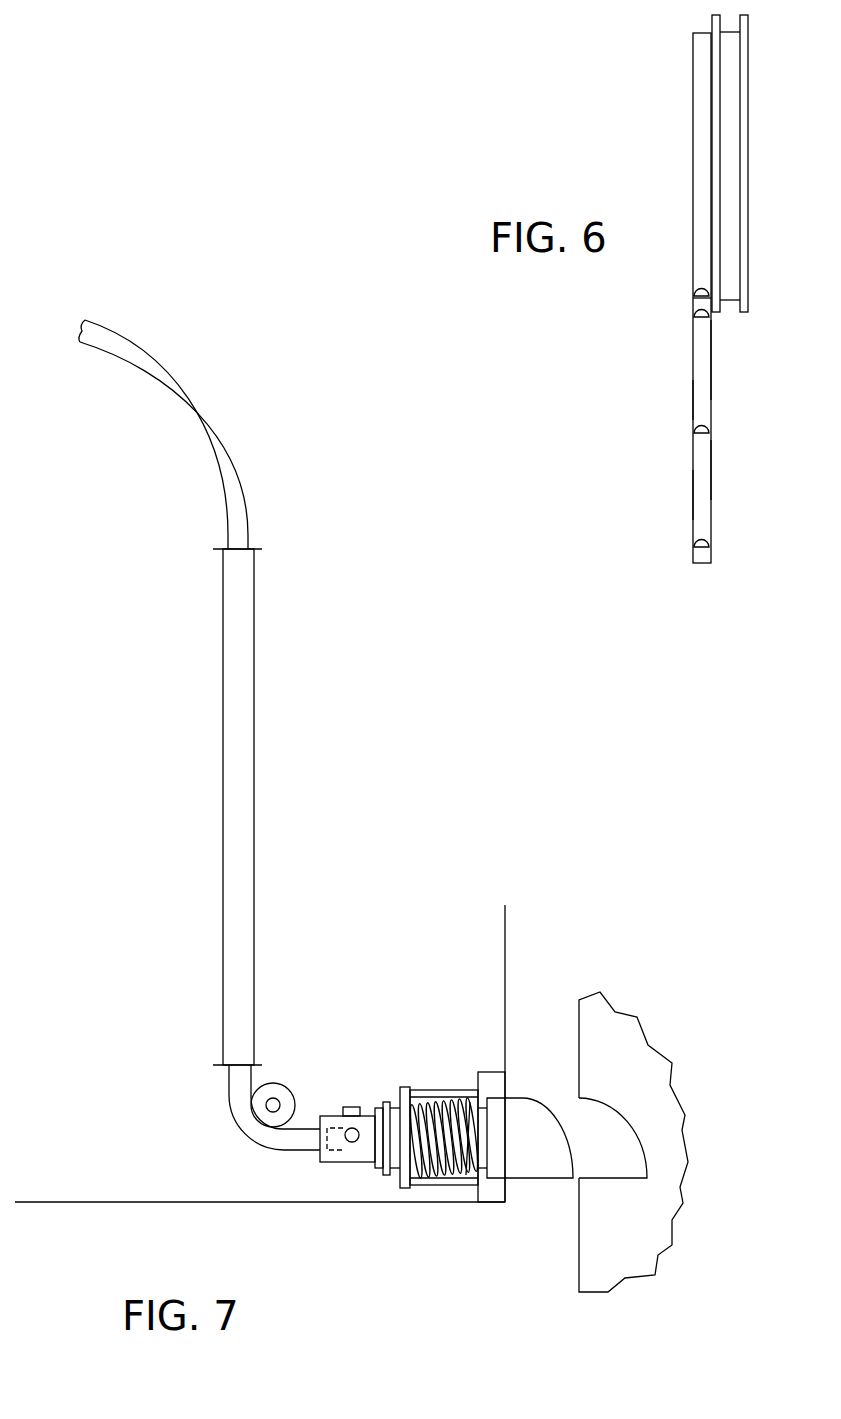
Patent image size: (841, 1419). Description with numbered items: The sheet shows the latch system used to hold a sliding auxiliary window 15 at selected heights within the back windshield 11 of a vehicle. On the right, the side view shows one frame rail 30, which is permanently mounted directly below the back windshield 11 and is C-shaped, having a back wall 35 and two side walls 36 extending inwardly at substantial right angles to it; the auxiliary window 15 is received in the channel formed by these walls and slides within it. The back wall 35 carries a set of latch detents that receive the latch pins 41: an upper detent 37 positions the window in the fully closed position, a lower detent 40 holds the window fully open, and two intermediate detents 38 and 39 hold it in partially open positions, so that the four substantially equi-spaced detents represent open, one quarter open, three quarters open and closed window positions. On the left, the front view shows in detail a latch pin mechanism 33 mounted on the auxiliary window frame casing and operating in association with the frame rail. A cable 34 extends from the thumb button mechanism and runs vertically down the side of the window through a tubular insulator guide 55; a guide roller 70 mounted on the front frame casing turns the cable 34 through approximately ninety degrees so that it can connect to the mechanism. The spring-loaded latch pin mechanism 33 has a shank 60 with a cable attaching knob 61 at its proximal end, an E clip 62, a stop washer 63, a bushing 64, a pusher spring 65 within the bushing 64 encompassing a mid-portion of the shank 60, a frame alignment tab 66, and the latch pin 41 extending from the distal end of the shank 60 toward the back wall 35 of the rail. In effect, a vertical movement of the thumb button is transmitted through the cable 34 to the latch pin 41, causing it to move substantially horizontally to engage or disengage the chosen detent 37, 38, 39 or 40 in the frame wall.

In FIG. 6, the back windshield 11 is at (735, 93).
In FIG. 6, the auxiliary window 15 is at (693, 80).
In FIG. 6, the frame rail 30 is at (705, 398).
In FIG. 7, the latch pin mechanism 33 is at (322, 993).
In FIG. 7, the cable 34 is at (164, 392).
In FIG. 6, the back wall 35 is at (712, 360).
In FIG. 7, the back wall 35 is at (590, 1030).
In FIG. 6, the side wall 36 is at (712, 468).
In FIG. 6, the upper detent 37 is at (694, 296).
In FIG. 7, the upper detent 37 is at (613, 1160).
In FIG. 6, the intermediate detent 38 is at (694, 315).
In FIG. 6, the intermediate detent 39 is at (694, 432).
In FIG. 6, the lower detent 40 is at (694, 545).
In FIG. 7, the latch pin 41 is at (512, 1116).
In FIG. 7, the tubular insulator guide 55 is at (255, 668).
In FIG. 7, the shank 60 is at (449, 1099).
In FIG. 7, the cable attaching knob 61 is at (346, 1155).
In FIG. 7, the E clip 62 is at (386, 1176).
In FIG. 7, the stop washer 63 is at (400, 1095).
In FIG. 7, the bushing 64 is at (432, 1183).
In FIG. 7, the pusher spring 65 is at (456, 1170).
In FIG. 7, the frame alignment tab 66 is at (495, 1072).
In FIG. 7, the guide roller 70 is at (272, 1083).